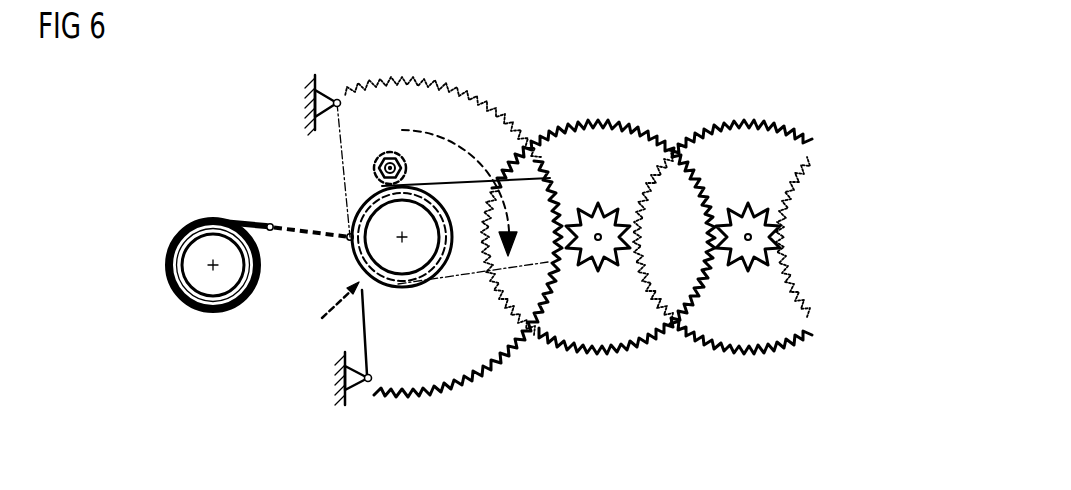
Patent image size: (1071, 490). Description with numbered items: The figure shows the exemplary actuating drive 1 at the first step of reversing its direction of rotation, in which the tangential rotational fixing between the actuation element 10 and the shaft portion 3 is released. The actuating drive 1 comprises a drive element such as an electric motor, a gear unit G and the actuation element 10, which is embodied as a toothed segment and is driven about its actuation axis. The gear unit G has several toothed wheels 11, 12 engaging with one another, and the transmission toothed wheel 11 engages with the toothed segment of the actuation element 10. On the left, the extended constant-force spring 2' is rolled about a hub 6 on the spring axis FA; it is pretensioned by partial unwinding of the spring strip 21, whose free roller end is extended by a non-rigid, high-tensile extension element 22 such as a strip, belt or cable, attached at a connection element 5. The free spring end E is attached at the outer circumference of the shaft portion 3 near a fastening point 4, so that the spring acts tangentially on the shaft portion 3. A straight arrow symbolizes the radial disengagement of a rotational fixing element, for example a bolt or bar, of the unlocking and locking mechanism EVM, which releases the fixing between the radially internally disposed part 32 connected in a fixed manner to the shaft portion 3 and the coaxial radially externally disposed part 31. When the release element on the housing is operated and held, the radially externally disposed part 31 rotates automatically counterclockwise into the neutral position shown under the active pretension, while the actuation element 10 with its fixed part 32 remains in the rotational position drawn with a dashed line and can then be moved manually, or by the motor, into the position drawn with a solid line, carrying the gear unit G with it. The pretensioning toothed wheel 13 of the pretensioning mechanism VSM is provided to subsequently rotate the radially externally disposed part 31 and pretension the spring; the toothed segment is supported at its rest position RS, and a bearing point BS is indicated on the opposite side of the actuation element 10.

The actuating drive 1 is at (662, 87).
The extended constant-force spring 2' is at (213, 296).
The shaft portion 3 is at (447, 270).
The fastening point 4 is at (346, 243).
The connection element 5 is at (270, 223).
The hub 6 is at (183, 276).
The actuation element 10 is at (495, 108).
The transmission toothed wheel 11 is at (574, 350).
The transmission toothed wheel 12 is at (752, 352).
The pretensioning toothed wheel 13 is at (406, 168).
The spring strip 21 is at (243, 213).
The extension element 22 is at (301, 229).
The radially externally disposed part of the shaft portion 31 is at (380, 284).
The radially internally disposed part of the shaft portion 32 is at (418, 280).
The bearing point BS is at (342, 379).
The free spring end E is at (346, 233).
The unlocking and locking mechanism EVM is at (315, 315).
The spring axis FA is at (208, 268).
The gear unit G is at (670, 345).
The rest position RS is at (323, 83).
The pretensioning mechanism VSM is at (368, 183).